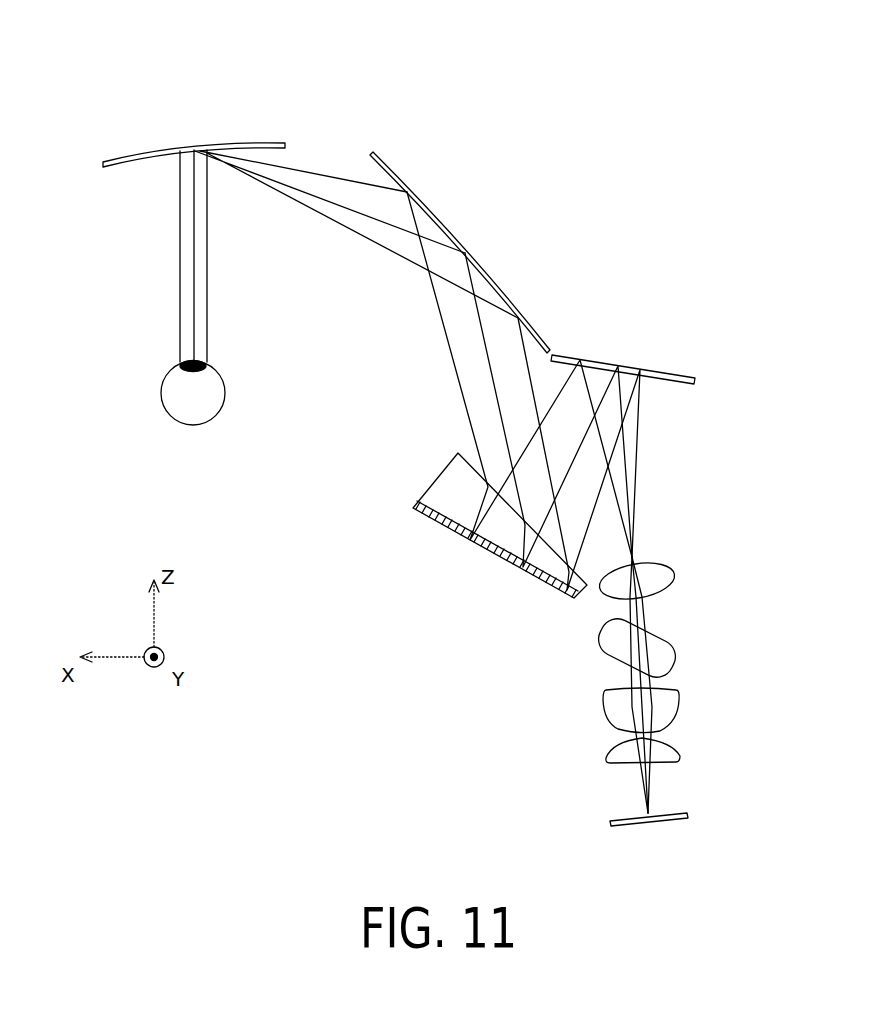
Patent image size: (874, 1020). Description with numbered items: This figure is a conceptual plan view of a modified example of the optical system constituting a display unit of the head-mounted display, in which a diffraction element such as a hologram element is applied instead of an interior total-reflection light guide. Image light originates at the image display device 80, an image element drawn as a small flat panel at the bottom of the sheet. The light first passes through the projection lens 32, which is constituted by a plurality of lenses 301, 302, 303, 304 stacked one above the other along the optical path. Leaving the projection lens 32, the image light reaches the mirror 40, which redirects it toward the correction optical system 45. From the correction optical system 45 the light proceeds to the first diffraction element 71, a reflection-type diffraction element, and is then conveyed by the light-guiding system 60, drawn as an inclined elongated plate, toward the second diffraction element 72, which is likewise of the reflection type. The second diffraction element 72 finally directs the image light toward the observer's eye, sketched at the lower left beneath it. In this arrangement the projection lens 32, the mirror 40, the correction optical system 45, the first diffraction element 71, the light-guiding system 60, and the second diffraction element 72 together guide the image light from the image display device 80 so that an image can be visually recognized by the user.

The second diffraction element 72 is at (250, 140).
The light-guiding system 60 is at (440, 218).
The mirror 40 is at (695, 377).
The correction optical system 45 is at (427, 540).
The first diffraction element 71 is at (458, 527).
The projection lens 32 is at (705, 662).
The lens 304 is at (673, 580).
The lens 303 is at (676, 657).
The lens 302 is at (672, 708).
The lens 301 is at (683, 752).
The image display device 80 is at (689, 818).